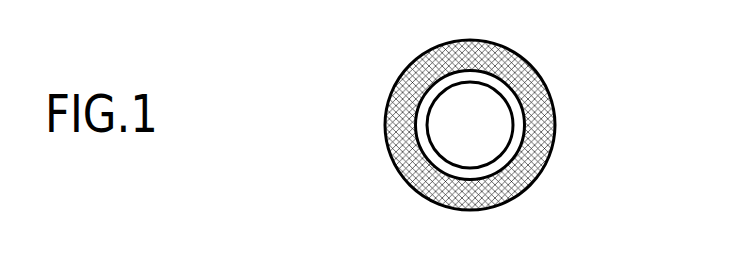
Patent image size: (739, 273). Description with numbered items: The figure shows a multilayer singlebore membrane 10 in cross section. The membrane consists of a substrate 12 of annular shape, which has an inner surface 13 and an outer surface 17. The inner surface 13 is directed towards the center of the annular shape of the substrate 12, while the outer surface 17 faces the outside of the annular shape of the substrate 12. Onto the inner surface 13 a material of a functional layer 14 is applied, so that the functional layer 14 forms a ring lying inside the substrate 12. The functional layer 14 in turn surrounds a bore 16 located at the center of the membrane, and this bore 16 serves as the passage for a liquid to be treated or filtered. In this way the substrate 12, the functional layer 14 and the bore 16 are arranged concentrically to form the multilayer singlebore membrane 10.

The multilayer singlebore membrane 10 is at (368, 144).
The substrate 12 is at (532, 87).
The inner surface 13 is at (510, 167).
The functional layer 14 is at (428, 97).
The bore 16 is at (482, 138).
The outer surface 17 is at (557, 113).